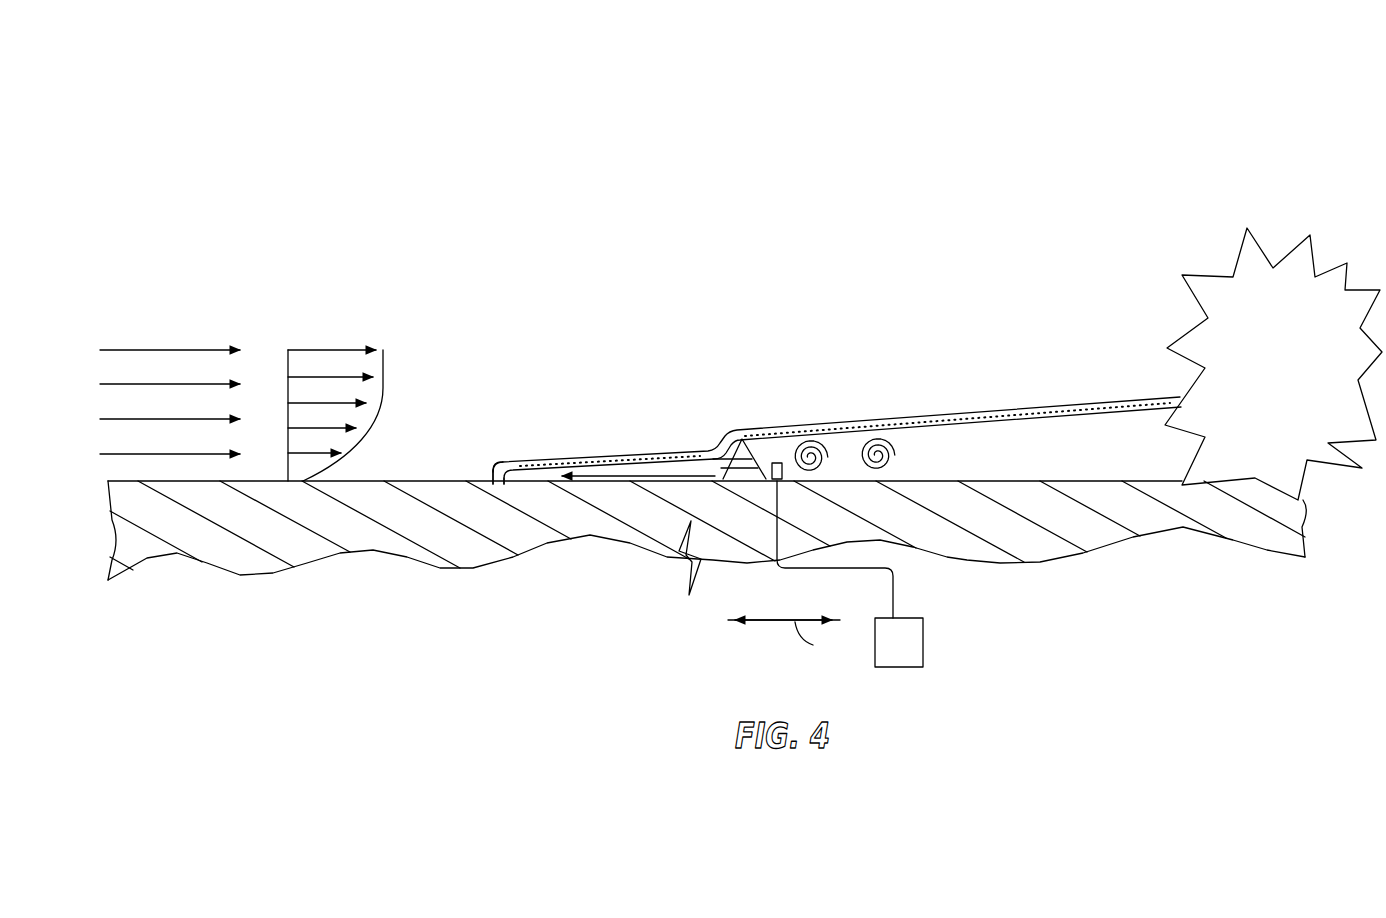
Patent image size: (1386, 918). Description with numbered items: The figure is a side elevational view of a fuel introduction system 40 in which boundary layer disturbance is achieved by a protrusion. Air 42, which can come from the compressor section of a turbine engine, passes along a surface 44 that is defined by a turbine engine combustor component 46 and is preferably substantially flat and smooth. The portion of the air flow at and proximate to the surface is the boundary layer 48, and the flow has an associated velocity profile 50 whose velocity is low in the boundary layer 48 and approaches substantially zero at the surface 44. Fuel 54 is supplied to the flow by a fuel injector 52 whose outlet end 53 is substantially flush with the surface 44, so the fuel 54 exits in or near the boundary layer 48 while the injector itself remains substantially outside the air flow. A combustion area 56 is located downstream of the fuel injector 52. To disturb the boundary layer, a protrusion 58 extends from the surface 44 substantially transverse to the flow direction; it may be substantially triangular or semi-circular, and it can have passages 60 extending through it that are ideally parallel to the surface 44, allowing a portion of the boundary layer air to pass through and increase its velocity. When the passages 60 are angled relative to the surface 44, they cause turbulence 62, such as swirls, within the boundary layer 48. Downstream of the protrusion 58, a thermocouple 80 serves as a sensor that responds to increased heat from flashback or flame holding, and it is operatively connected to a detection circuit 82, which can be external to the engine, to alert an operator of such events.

The fuel introduction system 40 is at (241, 133).
The air 42 is at (168, 348).
The surface 44 is at (371, 481).
The turbine engine combustor component 46 is at (262, 548).
The boundary layer 48 is at (260, 464).
The velocity profile 50 is at (385, 332).
The fuel injector 52 is at (495, 490).
The outlet end 53 is at (493, 478).
The fuel 54 is at (625, 460).
The combustion area 56 is at (1253, 270).
The protrusion 58 is at (738, 441).
The passages 60 is at (724, 456).
The turbulence 62 is at (895, 452).
The thermocouple 80 is at (783, 481).
The detection circuit 82 is at (923, 652).